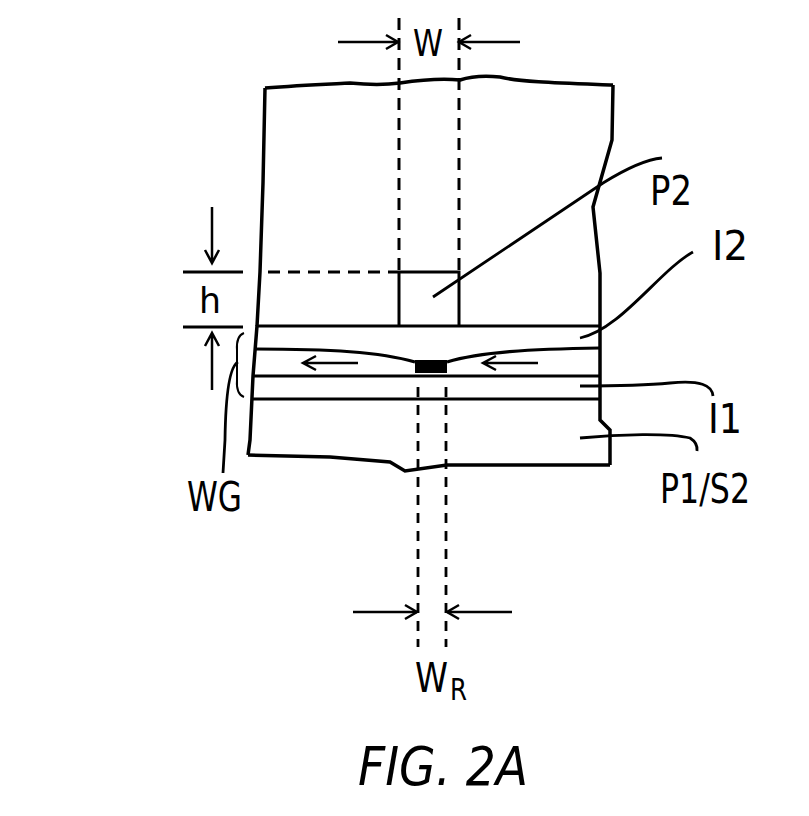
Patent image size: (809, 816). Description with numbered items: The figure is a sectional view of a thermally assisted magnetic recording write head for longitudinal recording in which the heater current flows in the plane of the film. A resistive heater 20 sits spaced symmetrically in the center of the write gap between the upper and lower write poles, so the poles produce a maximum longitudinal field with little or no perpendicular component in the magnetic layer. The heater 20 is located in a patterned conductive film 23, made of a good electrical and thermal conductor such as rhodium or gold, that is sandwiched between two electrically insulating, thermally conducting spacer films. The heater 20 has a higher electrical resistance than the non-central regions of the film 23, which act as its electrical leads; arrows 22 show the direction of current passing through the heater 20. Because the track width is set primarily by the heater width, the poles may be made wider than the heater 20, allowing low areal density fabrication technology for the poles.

The resistive heater 20 is at (415, 369).
The arrows 22 is at (330, 367).
The conductive film 23 is at (285, 367).